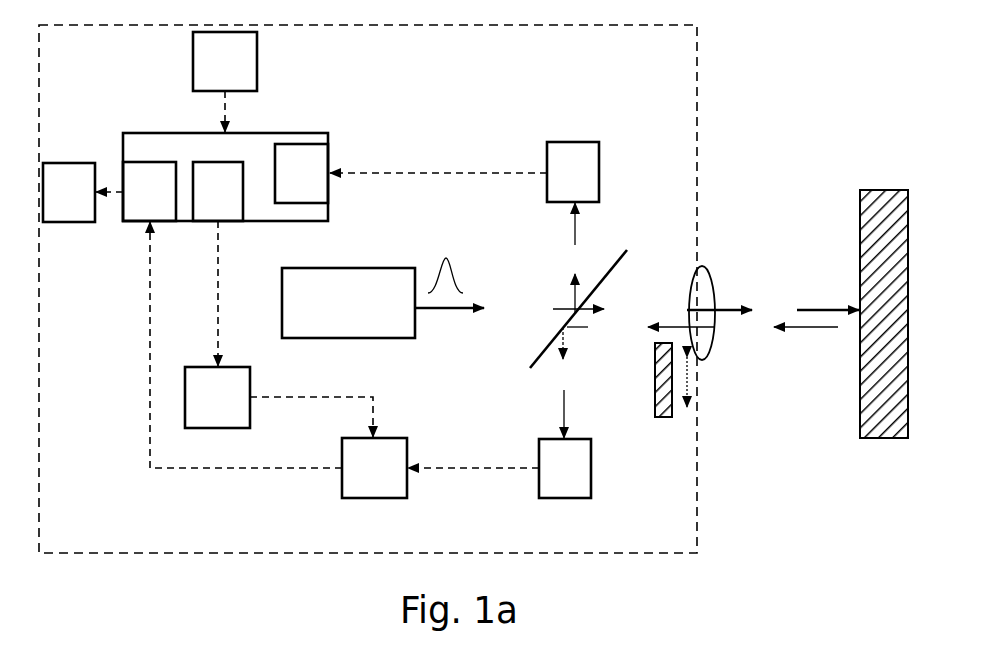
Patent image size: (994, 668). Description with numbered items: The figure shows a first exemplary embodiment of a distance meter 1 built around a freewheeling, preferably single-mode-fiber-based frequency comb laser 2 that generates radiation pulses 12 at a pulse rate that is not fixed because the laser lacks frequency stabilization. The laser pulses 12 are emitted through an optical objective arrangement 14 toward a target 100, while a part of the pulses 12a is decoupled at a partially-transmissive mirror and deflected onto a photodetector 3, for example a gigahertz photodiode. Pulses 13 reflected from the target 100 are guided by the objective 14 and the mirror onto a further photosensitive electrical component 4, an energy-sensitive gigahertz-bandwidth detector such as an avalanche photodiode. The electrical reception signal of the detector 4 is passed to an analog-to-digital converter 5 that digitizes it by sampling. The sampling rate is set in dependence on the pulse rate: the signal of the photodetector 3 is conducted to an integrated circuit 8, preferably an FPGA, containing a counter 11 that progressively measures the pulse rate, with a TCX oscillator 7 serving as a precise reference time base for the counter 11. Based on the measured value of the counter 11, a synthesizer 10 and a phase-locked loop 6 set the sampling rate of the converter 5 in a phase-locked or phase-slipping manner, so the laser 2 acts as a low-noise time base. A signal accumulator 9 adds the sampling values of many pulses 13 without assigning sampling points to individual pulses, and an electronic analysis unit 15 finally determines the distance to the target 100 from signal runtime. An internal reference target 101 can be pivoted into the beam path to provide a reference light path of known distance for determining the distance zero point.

The distance meter 1 is at (368, 289).
The frequency comb laser 2 is at (372, 298).
The photodetector 3 is at (464, 193).
The photosensitive electrical component 4 is at (499, 444).
The analog-to-digital converter 5 is at (278, 360).
The phase-locked loop 6 is at (433, 312).
The TCX oscillator 7 is at (225, 82).
The integrated circuit 8 is at (231, 145).
The signal accumulator 9 is at (149, 191).
The synthesizer 10 is at (218, 191).
The counter 11 is at (301, 173).
The radiation pulses 12 is at (455, 320).
The decoupled pulses 12a is at (561, 240).
The reflected pulses 13 is at (700, 356).
The optical objective arrangement 14 is at (729, 291).
The electronic analysis unit 15 is at (83, 192).
The target 100 is at (829, 309).
The internal reference target 101 is at (658, 410).